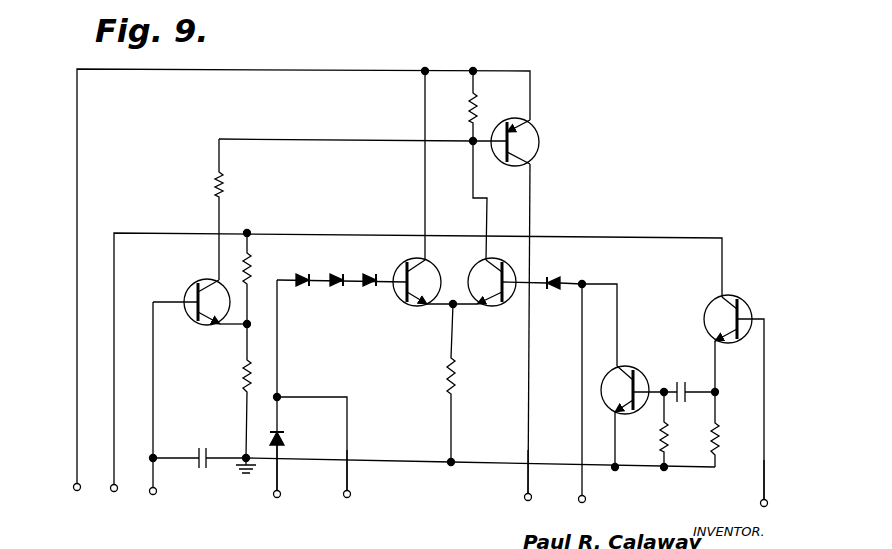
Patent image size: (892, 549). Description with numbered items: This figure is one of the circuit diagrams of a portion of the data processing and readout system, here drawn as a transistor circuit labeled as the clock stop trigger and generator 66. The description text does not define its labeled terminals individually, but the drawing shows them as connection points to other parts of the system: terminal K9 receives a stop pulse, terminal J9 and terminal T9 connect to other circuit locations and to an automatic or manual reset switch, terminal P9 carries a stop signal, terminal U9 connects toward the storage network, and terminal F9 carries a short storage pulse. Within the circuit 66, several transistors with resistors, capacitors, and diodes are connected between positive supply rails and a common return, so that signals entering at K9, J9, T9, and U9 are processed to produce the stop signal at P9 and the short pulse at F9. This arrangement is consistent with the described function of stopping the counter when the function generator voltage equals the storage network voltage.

The clock stop trigger and generator 66 is at (433, 309).
The terminal K9 (to 60 stop pulse) K9 is at (185, 483).
The terminal J9 (to J10a) J9 is at (274, 476).
The terminal T9 (to auto/man reset switch) T9 is at (371, 488).
The stop signal terminal P9 (to P13) P9 is at (511, 483).
The terminal U9 (to U8) storage network U9 is at (621, 400).
The storage short pulse terminal F9 (to F14) F9 is at (754, 485).